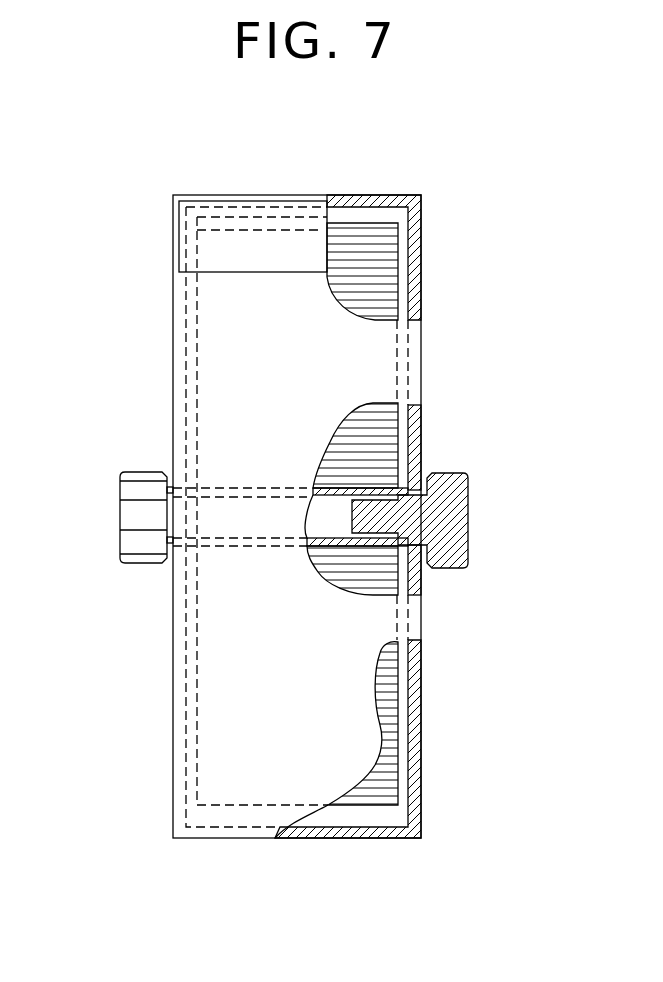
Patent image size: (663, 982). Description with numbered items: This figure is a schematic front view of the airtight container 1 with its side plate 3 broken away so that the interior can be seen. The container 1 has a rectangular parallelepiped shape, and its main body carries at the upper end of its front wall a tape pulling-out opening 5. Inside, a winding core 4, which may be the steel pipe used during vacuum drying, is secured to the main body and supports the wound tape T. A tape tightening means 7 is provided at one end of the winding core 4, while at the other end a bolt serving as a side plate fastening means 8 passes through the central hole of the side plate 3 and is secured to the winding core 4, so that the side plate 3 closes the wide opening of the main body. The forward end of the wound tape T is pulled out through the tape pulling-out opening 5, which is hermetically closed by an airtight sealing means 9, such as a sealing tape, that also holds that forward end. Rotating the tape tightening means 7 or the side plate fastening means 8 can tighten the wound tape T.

The container 1 is at (348, 197).
The side plate 3 is at (418, 297).
The winding core 4 is at (243, 547).
The tape pulling-out opening 5 is at (220, 225).
The tape tightening means 7 is at (130, 515).
The side plate fastening means 8 is at (462, 522).
The airtight sealing means 9 is at (207, 254).
The wound tape T is at (383, 253).